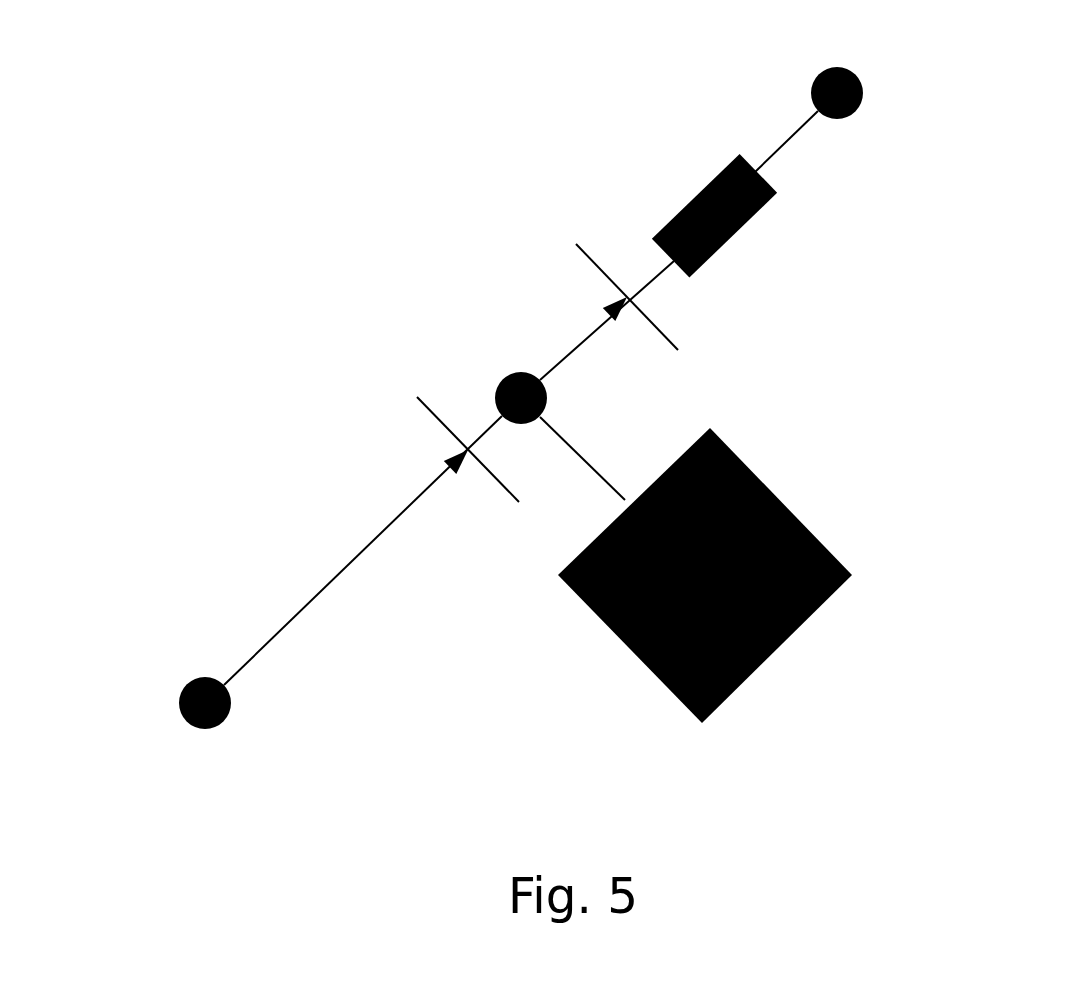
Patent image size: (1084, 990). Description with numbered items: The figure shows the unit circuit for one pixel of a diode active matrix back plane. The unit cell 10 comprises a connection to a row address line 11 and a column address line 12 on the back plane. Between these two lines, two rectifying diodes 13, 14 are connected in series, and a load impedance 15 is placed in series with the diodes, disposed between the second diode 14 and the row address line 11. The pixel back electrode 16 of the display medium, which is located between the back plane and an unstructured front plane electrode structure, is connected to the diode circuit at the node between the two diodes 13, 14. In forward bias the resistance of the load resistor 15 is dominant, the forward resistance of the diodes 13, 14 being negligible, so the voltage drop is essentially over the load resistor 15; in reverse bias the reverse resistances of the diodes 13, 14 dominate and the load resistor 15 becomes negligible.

The unit cell 10 is at (290, 199).
The row address line 11 is at (813, 70).
The column address line 12 is at (168, 716).
The rectifying diode 13 is at (437, 450).
The rectifying diode 14 is at (590, 292).
The load impedance 15 is at (751, 247).
The pixel back electrode 16 is at (790, 668).